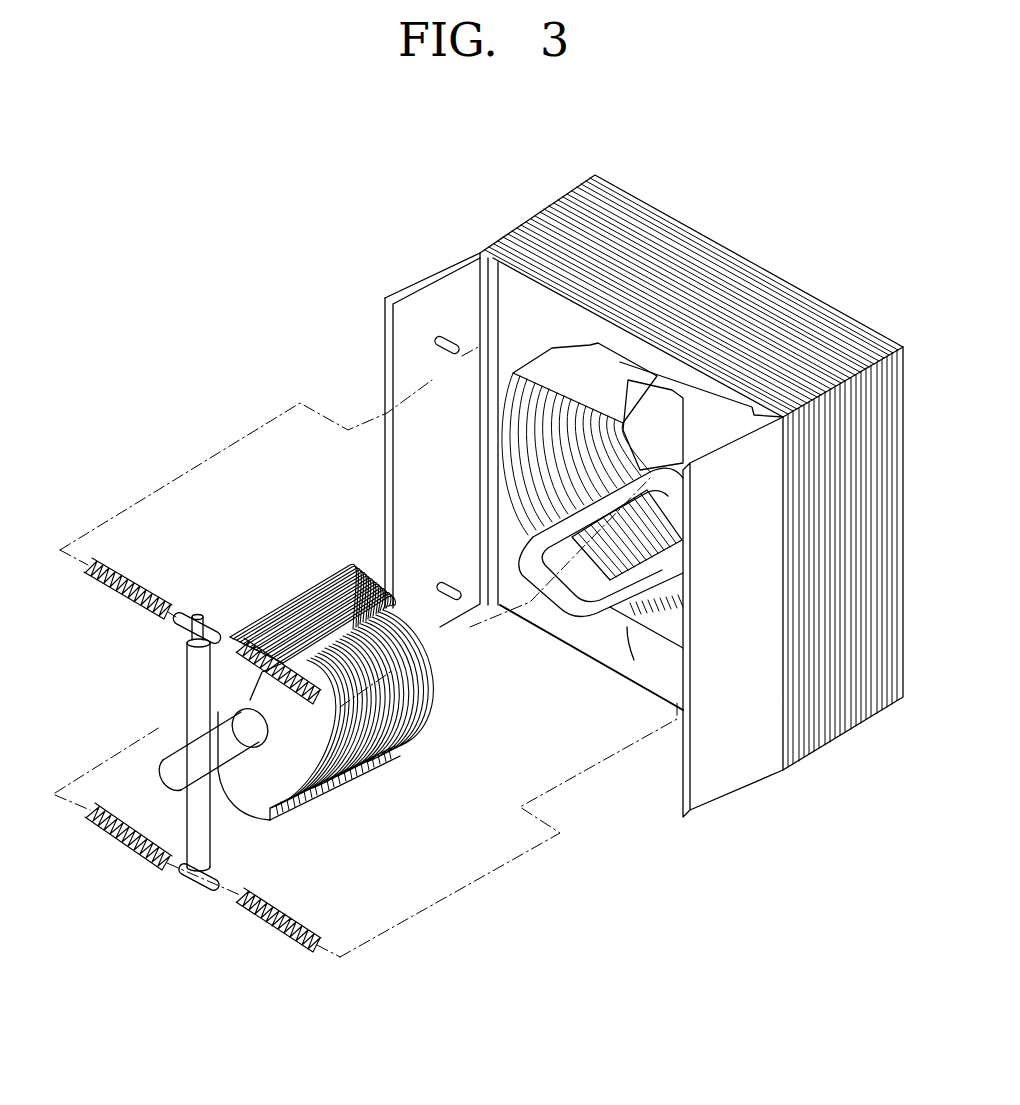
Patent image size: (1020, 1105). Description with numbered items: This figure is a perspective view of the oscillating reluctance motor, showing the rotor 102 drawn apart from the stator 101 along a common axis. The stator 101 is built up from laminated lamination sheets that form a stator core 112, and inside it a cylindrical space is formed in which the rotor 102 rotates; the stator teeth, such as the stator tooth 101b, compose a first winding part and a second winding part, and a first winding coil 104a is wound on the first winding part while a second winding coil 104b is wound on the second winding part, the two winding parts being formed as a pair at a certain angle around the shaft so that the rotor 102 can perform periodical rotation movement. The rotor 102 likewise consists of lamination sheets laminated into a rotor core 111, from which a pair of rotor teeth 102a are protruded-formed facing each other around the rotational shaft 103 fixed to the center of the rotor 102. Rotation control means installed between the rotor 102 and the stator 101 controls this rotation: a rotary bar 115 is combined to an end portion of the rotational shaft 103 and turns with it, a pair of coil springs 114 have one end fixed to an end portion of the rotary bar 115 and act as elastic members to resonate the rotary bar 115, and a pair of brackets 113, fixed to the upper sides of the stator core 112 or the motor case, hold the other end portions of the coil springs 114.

The stator 101 is at (703, 213).
The stator tooth 101b is at (598, 550).
The rotor 102 is at (268, 588).
The rotor teeth 102a is at (350, 565).
The rotational shaft 103 is at (160, 768).
The first winding coil 104a is at (547, 397).
The second winding coil 104b is at (628, 385).
The rotor core 111 is at (277, 780).
The stator core 112 is at (547, 221).
The brackets 113 is at (747, 733).
The coil springs 114 is at (125, 850).
The rotary bar 115 is at (197, 860).